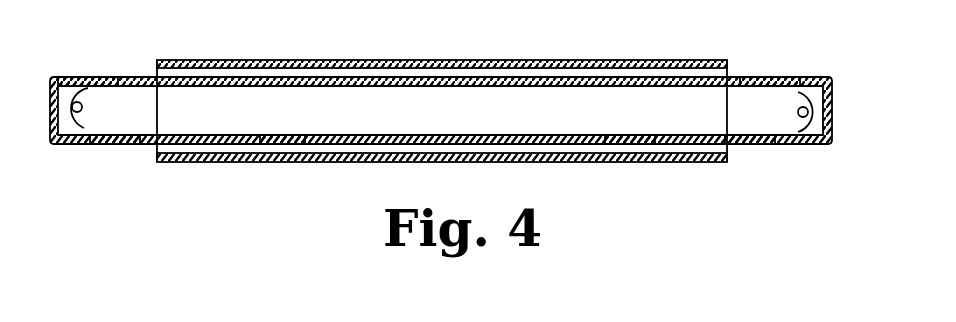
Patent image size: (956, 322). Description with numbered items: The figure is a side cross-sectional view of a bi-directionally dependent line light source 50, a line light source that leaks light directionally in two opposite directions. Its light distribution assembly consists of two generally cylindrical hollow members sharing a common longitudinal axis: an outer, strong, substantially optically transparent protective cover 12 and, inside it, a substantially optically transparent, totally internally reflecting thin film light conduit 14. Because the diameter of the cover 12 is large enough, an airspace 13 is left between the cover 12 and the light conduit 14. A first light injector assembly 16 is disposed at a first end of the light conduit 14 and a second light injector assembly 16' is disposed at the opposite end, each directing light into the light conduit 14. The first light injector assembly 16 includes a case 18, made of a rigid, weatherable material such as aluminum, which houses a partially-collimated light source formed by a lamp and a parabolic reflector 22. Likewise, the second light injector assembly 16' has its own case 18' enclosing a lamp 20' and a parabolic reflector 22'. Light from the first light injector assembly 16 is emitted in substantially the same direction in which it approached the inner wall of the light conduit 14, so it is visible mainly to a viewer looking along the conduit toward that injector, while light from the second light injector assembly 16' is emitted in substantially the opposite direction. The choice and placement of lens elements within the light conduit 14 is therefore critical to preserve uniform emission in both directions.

The protective cover 12 is at (367, 154).
The airspace 13 is at (629, 143).
The light conduit 14 is at (280, 142).
The first light injector assembly 16 is at (115, 179).
The second light injector assembly 16' is at (750, 178).
The case 18 is at (88, 57).
The case 18' is at (770, 57).
The lamp 20' is at (799, 153).
The parabolic reflector 22 is at (70, 143).
The parabolic reflector 22' is at (821, 80).
The bi-directionally dependent line light source 50 is at (364, 46).